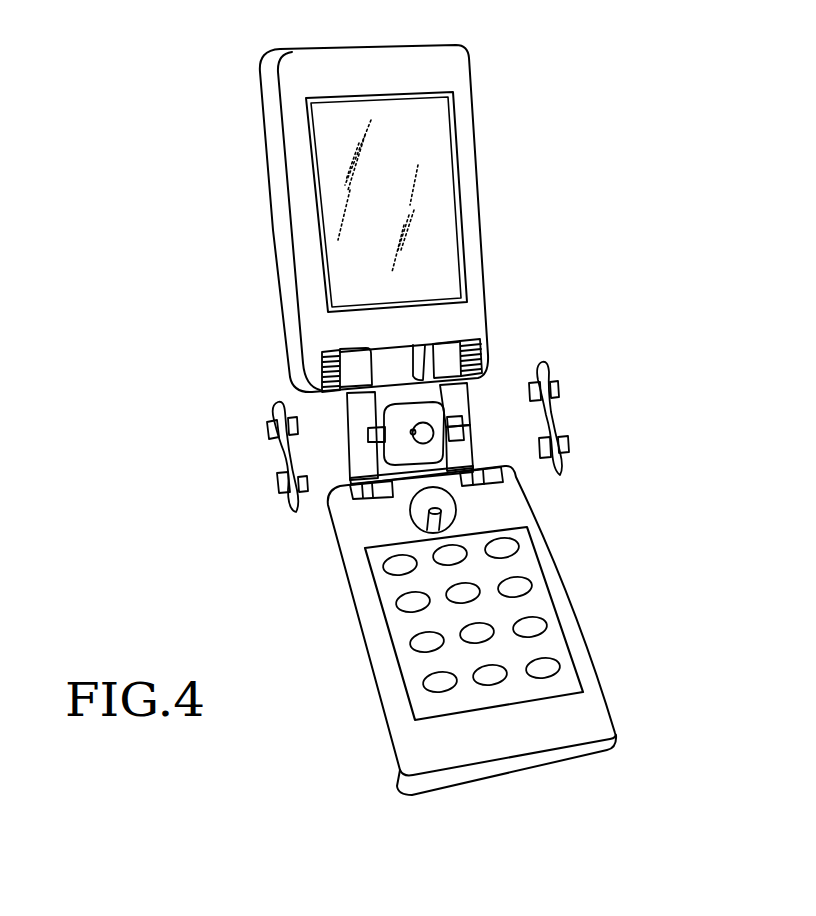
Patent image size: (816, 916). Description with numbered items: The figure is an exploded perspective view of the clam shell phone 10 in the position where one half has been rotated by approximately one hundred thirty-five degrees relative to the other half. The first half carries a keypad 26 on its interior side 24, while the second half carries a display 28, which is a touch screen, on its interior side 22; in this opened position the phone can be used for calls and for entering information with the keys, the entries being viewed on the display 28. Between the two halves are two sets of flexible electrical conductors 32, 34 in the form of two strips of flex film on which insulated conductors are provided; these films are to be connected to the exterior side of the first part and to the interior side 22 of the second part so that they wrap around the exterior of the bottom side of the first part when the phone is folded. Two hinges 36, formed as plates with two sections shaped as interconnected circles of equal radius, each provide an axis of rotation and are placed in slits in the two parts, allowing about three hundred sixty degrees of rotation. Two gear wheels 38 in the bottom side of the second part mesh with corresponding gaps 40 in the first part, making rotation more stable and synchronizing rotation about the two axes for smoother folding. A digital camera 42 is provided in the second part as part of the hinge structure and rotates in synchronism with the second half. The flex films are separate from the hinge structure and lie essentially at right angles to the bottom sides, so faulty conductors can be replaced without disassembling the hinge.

The phone 10 is at (202, 163).
The interior side of the second half 22 is at (431, 62).
The interior side of the first half 24 is at (572, 727).
The keypad 26 is at (530, 622).
The display 28 is at (430, 250).
The flexible electrical conductors 32 is at (457, 398).
The flexible electrical conductors 34 is at (355, 453).
The hinges 36 is at (277, 445).
The gear wheels 38 is at (323, 373).
The gaps 40 is at (350, 475).
The digital camera 42 is at (467, 436).